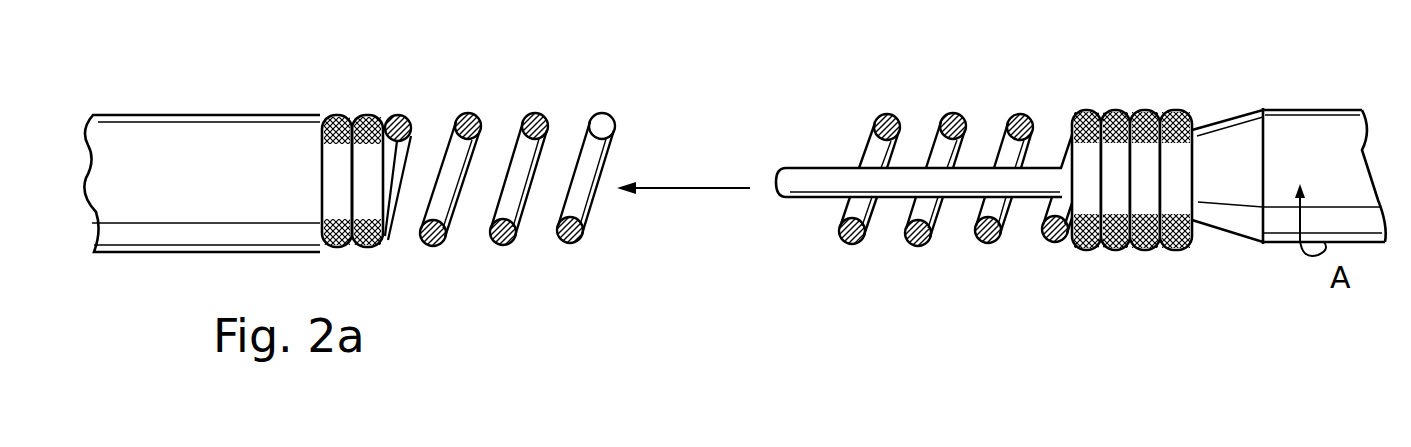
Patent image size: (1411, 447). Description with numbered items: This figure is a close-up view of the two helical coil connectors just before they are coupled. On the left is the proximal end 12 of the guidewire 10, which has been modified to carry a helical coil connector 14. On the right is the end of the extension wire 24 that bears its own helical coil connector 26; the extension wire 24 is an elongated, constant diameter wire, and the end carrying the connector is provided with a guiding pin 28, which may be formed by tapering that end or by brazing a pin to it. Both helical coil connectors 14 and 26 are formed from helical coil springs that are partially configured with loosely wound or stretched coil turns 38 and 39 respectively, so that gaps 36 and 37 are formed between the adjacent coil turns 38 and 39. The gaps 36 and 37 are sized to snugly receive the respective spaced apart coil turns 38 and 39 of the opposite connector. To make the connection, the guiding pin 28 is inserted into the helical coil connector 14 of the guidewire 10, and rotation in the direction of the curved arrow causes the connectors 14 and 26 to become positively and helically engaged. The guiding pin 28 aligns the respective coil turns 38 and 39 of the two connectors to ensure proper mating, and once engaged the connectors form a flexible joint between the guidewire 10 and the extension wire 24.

The guidewire 10 is at (233, 106).
The proximal end 12 is at (319, 114).
The helical coil connector 14 is at (494, 109).
The extension wire 24 is at (1246, 106).
The helical coil connector 26 is at (1037, 105).
The guiding pin 28 is at (806, 188).
The gaps 36 is at (515, 170).
The gaps 37 is at (959, 179).
The coil turns 38 is at (549, 117).
The coil turns 39 is at (952, 113).